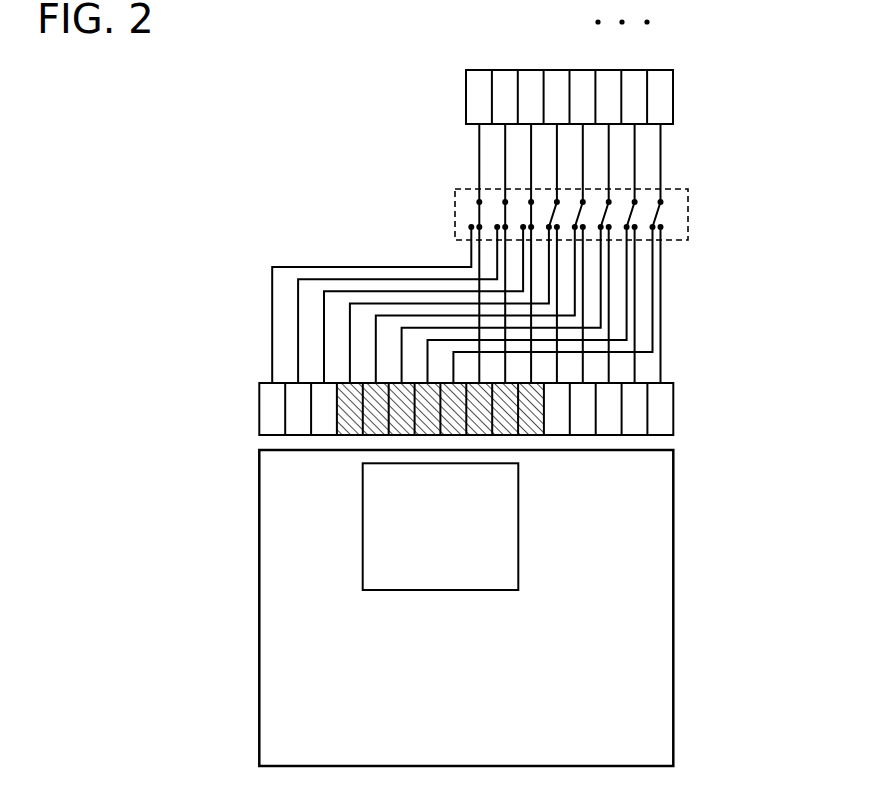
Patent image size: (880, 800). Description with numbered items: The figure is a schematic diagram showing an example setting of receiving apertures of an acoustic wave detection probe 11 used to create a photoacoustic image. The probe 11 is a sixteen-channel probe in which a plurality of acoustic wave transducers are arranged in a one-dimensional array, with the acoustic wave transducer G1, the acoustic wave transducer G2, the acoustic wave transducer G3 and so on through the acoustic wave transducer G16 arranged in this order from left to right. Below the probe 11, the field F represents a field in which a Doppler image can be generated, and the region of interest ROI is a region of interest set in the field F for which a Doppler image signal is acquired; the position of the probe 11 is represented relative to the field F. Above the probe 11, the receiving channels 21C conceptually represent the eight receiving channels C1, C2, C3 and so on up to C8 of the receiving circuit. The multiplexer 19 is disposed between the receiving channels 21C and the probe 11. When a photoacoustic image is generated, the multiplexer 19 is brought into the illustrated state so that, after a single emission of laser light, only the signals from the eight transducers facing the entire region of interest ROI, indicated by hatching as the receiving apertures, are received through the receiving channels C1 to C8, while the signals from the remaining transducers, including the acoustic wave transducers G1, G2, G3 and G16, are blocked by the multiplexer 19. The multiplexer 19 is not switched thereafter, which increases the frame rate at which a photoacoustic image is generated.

The receiving channels 21C is at (673, 95).
The receiving channel C1 is at (481, 78).
The receiving channel C2 is at (532, 78).
The receiving channel C3 is at (585, 78).
The receiving channel C8 is at (660, 78).
The multiplexer 19 is at (688, 212).
The probe 11 is at (679, 405).
The acoustic wave transducer G1 is at (271, 425).
The acoustic wave transducer G2 is at (300, 425).
The acoustic wave transducer G3 is at (326, 425).
The acoustic wave transducer G16 is at (664, 430).
The field F is at (504, 608).
The region of interest ROI is at (441, 526).